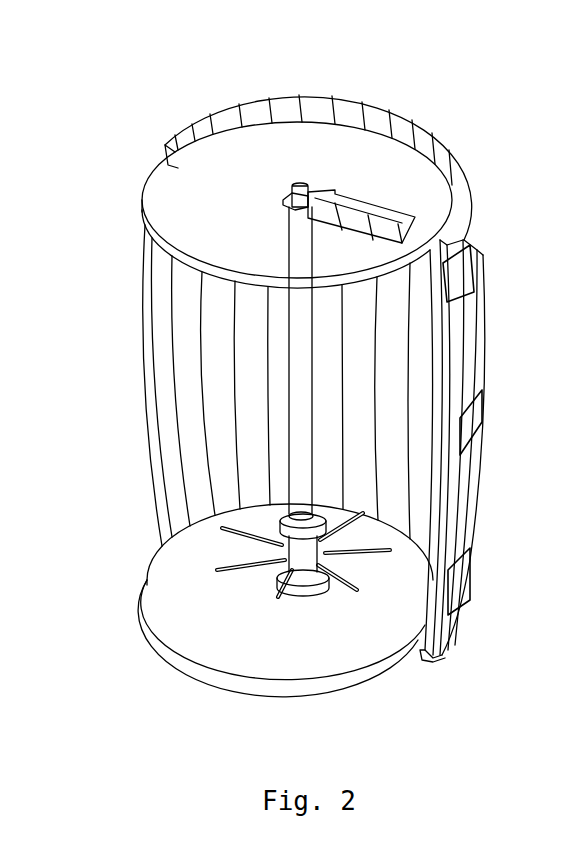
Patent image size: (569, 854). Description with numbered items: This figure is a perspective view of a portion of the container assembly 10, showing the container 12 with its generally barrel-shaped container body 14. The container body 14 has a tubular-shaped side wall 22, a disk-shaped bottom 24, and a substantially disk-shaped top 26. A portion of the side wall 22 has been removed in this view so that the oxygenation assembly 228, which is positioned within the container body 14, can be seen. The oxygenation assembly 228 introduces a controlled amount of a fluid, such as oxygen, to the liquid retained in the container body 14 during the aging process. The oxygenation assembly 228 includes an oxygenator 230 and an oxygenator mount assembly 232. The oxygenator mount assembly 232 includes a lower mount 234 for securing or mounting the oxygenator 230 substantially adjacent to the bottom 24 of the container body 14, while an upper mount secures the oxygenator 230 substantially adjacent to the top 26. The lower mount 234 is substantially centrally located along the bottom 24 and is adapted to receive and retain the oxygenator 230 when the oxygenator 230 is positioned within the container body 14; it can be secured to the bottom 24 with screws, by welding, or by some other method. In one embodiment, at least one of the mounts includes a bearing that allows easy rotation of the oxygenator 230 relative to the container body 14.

The container assembly 10 is at (484, 122).
The container 12 is at (467, 310).
The container body 14 is at (192, 347).
The side wall 22 is at (455, 372).
The bottom 24 is at (243, 623).
The top 26 is at (237, 162).
The oxygenation assembly 228 is at (70, 474).
The oxygenator 230 is at (300, 467).
The oxygenator mount assembly 232 is at (285, 552).
The lower mount 234 is at (278, 572).